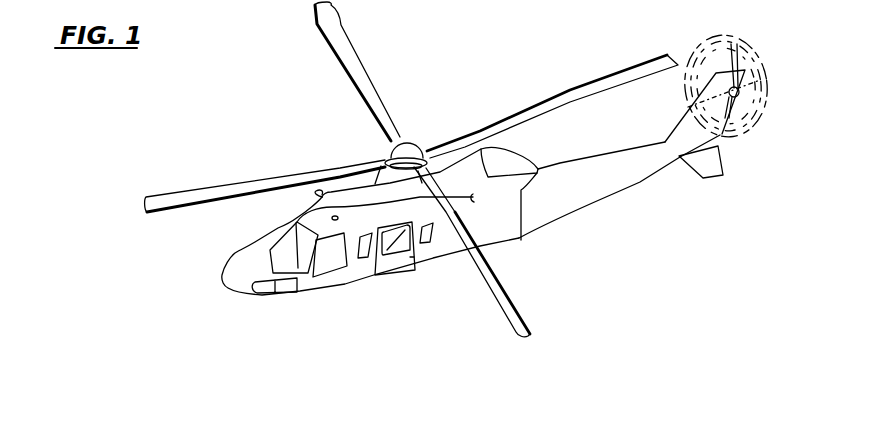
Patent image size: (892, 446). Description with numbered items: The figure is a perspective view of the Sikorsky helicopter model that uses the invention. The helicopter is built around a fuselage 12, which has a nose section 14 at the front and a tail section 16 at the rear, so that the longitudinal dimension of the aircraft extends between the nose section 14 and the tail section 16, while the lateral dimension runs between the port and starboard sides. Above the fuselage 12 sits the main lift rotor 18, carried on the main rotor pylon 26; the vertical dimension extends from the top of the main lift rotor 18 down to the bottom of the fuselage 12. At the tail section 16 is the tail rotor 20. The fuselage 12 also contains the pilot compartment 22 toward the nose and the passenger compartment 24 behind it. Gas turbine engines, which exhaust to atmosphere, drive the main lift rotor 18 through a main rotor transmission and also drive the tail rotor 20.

The fuselage 12 is at (513, 226).
The nose section 14 is at (245, 258).
The tail section 16 is at (670, 165).
The main lift rotor 18 is at (413, 137).
The tail rotor 20 is at (760, 108).
The pilot compartment 22 is at (297, 266).
The passenger compartment 24 is at (395, 250).
The main rotor pylon 26 is at (403, 188).